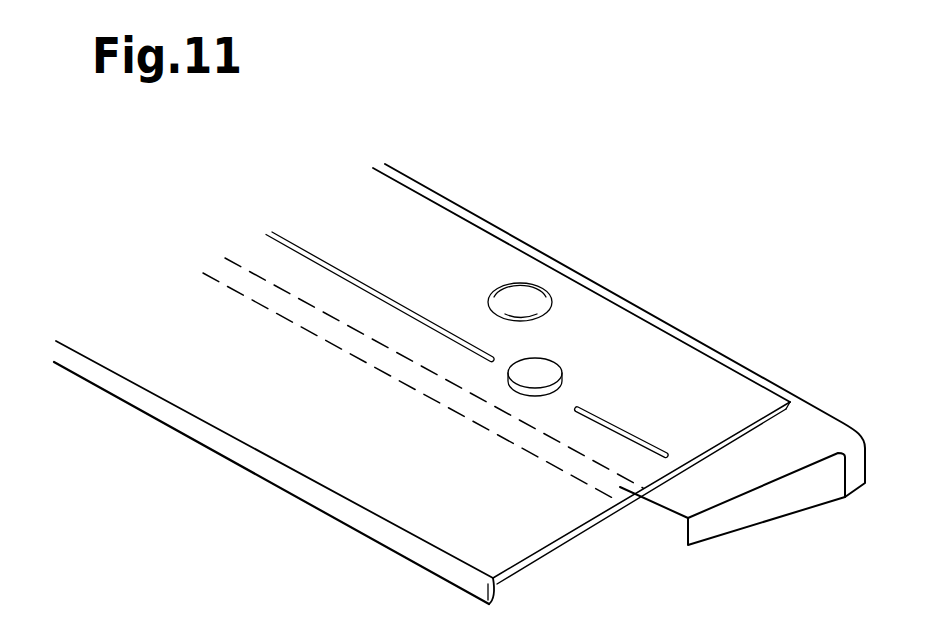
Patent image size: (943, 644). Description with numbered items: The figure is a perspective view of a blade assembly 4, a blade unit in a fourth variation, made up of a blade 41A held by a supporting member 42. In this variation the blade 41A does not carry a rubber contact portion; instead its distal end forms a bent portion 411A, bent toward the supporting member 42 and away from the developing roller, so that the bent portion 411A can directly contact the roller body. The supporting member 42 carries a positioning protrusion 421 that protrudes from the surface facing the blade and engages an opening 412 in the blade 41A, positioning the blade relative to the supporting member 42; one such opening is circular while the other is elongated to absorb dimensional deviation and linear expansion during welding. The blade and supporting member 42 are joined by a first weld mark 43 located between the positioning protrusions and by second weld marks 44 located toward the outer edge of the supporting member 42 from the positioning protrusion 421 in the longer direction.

The blade assembly 4 is at (722, 227).
The bent portion 411A is at (380, 522).
The blade 41A is at (535, 532).
The opening 412 is at (554, 386).
The supporting member 42 is at (740, 500).
The positioning protrusion 421 is at (540, 367).
The first weld mark 43 is at (387, 293).
The second weld mark 44 is at (653, 440).